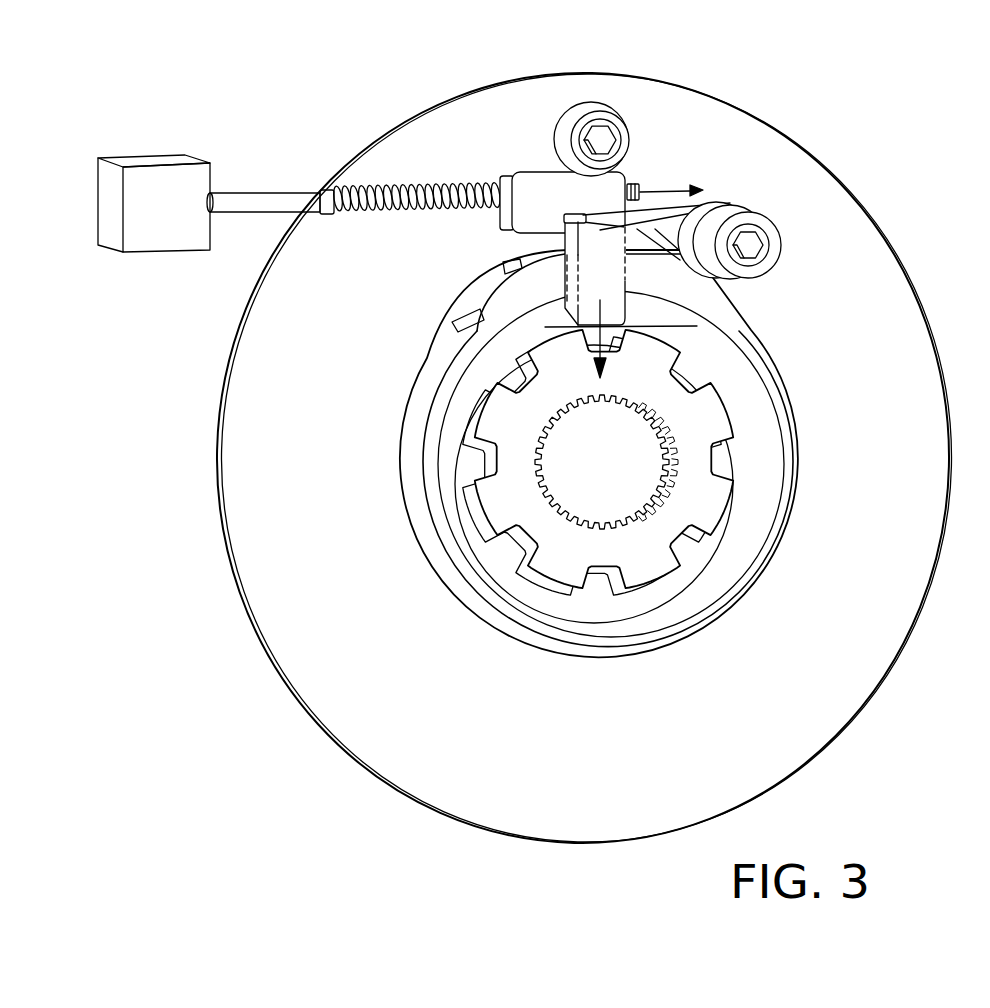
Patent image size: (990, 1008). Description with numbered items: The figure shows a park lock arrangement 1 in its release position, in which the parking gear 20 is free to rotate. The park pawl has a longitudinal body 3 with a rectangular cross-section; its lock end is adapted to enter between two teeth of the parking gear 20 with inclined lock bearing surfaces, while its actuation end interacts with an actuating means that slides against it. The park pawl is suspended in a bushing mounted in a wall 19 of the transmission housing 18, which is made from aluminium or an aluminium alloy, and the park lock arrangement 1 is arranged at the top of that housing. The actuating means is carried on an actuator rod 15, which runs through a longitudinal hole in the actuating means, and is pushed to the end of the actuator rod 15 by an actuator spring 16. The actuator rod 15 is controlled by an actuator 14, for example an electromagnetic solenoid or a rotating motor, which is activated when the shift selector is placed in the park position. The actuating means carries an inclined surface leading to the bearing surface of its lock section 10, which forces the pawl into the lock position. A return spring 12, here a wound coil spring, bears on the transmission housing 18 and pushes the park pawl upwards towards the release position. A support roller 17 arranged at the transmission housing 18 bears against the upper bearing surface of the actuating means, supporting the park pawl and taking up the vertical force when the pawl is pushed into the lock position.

The park lock arrangement 1 is at (893, 93).
The body 3 is at (556, 237).
The lock section 10 is at (550, 200).
The return spring 12 is at (740, 203).
The actuator 14 is at (154, 162).
The actuator rod 15 is at (292, 194).
The actuator spring 16 is at (428, 185).
The support roller 17 is at (575, 115).
The transmission housing 18 is at (327, 463).
The wall 19 is at (448, 500).
The parking gear 20 is at (550, 534).